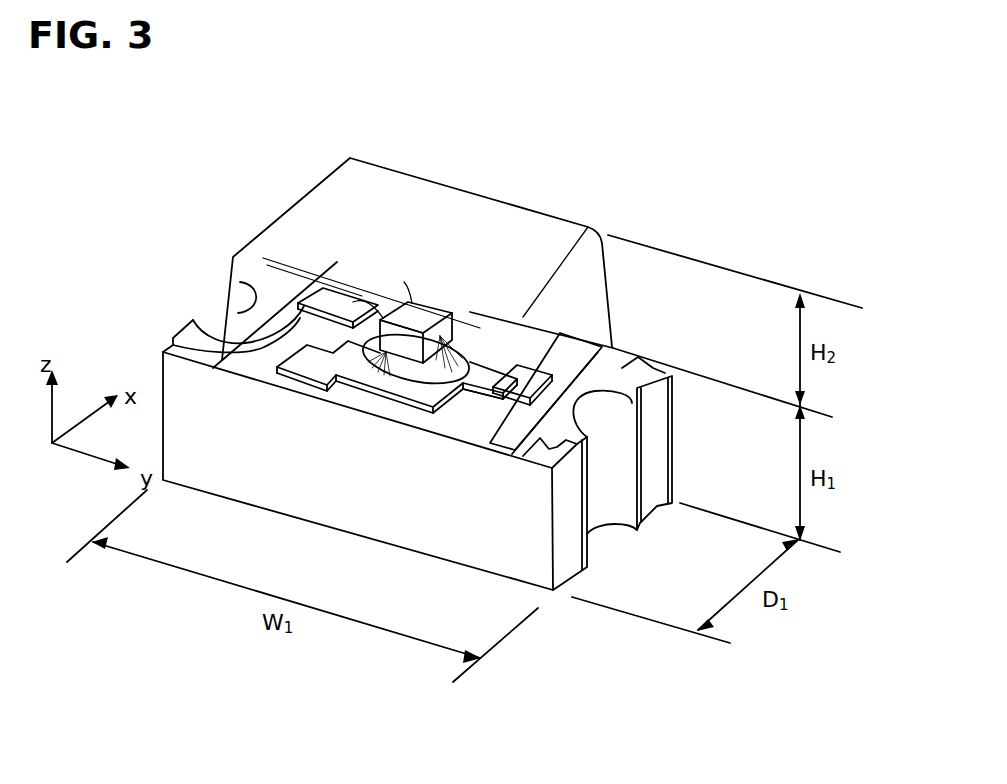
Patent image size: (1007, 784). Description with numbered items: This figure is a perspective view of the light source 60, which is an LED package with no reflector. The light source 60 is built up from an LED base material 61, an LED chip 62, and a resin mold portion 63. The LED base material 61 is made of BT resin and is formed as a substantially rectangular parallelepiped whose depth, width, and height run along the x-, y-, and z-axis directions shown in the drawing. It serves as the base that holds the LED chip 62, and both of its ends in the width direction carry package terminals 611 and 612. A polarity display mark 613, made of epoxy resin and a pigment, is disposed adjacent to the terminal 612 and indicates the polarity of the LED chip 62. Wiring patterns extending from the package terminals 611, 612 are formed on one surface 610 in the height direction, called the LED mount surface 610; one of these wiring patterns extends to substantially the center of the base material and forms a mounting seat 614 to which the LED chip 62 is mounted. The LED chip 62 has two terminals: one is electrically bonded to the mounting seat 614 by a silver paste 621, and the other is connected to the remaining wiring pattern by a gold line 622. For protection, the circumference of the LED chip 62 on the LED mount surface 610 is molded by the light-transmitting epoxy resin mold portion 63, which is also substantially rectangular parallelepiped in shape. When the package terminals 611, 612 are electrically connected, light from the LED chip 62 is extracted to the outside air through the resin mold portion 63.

The light source 60 is at (250, 128).
The LED base material 61 is at (162, 352).
The LED mount surface 610 is at (365, 406).
The package terminal 611 is at (243, 298).
The package terminal 612 is at (645, 375).
The polarity display mark 613 is at (577, 343).
The mounting seat 614 is at (497, 440).
The LED chip 62 is at (420, 327).
The silver paste 621 is at (428, 350).
The gold line 622 is at (352, 300).
The resin mold portion 63 is at (455, 212).